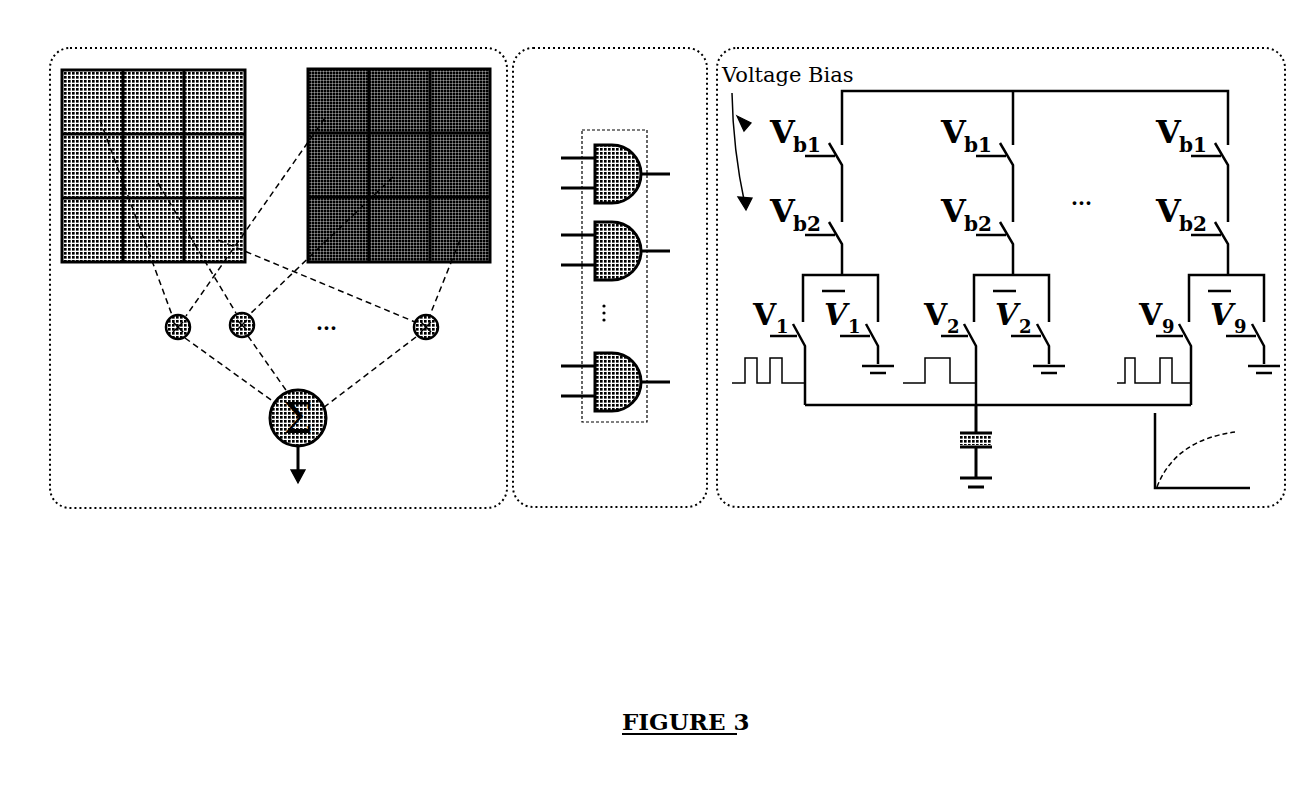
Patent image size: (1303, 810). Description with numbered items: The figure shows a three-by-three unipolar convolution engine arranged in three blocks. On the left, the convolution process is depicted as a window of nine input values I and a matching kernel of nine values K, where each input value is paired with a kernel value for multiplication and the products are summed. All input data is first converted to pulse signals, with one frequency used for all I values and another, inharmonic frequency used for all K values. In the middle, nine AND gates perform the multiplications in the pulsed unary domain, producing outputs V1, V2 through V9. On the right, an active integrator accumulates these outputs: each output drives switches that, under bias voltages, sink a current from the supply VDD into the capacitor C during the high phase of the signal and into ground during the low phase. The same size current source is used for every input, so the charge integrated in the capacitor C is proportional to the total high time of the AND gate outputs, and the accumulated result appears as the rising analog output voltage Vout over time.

The input values I is at (153, 166).
The kernel values K is at (399, 165).
The first AND gate output V1 is at (608, 168).
The second AND gate output V2 is at (608, 248).
The ninth AND gate output V9 is at (608, 378).
The supply voltage VDD is at (1035, 100).
The capacitor C is at (990, 446).
The output voltage Vout is at (1201, 441).